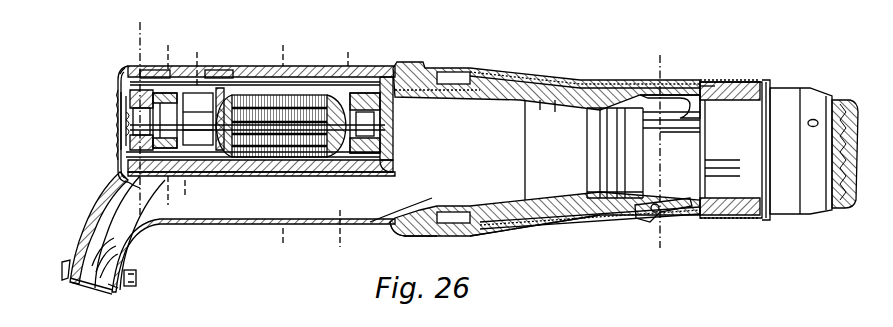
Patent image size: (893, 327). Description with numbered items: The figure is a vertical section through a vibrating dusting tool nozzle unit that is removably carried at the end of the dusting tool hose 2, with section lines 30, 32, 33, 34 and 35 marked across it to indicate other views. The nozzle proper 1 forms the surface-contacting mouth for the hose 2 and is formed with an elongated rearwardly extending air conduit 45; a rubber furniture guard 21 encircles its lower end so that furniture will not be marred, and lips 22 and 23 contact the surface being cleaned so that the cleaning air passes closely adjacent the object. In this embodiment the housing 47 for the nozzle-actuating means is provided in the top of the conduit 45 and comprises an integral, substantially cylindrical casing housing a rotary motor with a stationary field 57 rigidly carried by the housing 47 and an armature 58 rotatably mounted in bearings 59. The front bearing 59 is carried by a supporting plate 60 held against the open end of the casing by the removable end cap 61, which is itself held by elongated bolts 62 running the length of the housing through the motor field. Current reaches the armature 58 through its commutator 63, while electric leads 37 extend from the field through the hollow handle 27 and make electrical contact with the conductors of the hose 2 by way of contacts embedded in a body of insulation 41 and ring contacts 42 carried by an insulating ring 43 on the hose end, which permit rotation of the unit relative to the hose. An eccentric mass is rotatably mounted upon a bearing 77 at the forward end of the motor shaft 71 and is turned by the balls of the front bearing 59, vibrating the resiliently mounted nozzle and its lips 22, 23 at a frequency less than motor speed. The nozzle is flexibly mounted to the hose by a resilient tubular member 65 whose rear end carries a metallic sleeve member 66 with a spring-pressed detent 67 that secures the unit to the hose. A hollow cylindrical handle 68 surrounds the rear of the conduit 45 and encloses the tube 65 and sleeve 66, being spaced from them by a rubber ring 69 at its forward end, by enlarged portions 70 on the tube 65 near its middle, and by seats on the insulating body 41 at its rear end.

The nozzle proper 1 is at (94, 208).
The dusting tool hose 2 is at (838, 208).
The rubber furniture guard 21 is at (136, 284).
The lip 22 is at (71, 280).
The lip 23 is at (115, 288).
The hollow handle 27 is at (140, 22).
The section line 30 is at (283, 45).
The section line 32 is at (348, 52).
The section line 33 is at (197, 52).
The section line 34 is at (660, 57).
The section line 35 is at (168, 45).
The electric leads 37 is at (572, 78).
The body of insulation 41 is at (704, 82).
The ring contacts 42 is at (715, 96).
The insulating ring 43 is at (746, 196).
The air conduit 45 is at (545, 149).
The housing 47 is at (270, 174).
The stationary field 57 is at (277, 68).
The armature 58 is at (329, 191).
The bearings 59 is at (408, 122).
The supporting plate 60 is at (175, 68).
The removable end cap 61 is at (120, 110).
The elongated bolts 62 is at (121, 68).
The commutator 63 is at (203, 119).
The resilient tubular member 65 is at (558, 107).
The metallic sleeve member 66 is at (592, 128).
The spring-pressed detent 67 is at (680, 220).
The hollow cylindrical handle 68 is at (562, 222).
The rubber ring 69 is at (414, 234).
The enlarged portions 70 is at (485, 226).
The motor shaft 71 is at (124, 122).
The bearing 77 is at (130, 100).